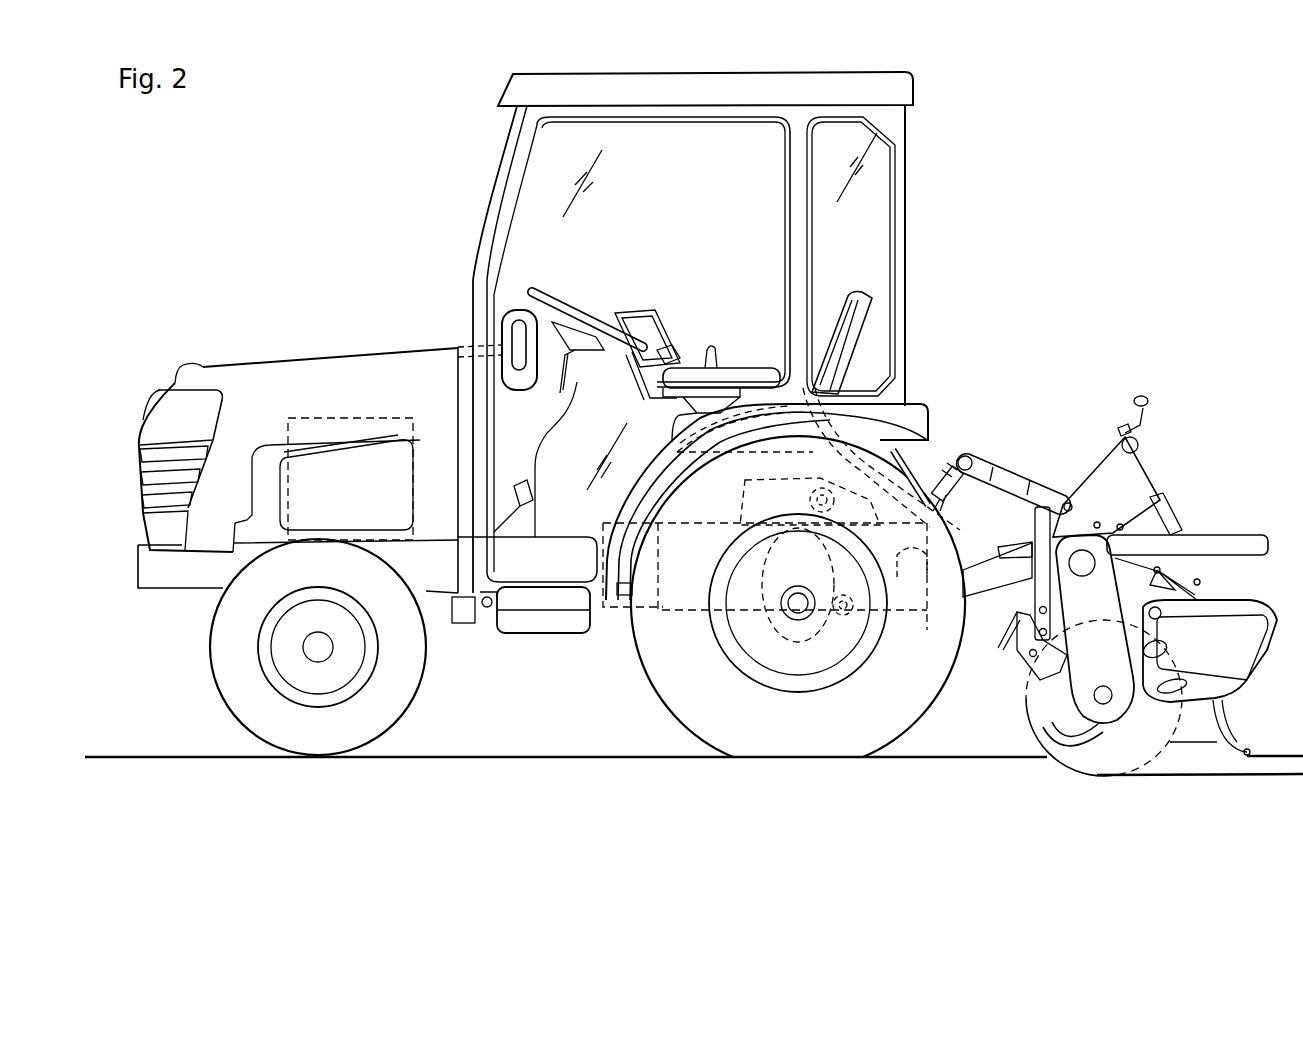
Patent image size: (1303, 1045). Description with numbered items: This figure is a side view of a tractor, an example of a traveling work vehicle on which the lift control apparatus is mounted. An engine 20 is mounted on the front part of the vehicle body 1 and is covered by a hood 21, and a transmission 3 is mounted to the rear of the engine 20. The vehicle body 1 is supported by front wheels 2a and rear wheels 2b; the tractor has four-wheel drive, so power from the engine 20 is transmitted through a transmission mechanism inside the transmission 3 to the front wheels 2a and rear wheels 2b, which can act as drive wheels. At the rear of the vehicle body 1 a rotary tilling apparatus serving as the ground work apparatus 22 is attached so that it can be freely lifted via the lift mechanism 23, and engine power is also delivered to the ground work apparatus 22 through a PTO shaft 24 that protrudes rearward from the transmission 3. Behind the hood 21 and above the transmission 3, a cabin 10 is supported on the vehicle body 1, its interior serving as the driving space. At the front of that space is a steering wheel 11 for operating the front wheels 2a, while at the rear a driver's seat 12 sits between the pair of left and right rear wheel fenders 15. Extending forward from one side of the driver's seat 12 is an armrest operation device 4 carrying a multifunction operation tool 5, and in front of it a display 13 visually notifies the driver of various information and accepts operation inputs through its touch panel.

The vehicle body 1 is at (150, 607).
The front wheels 2a is at (240, 710).
The rear wheels 2b is at (683, 715).
The transmission 3 is at (690, 575).
The armrest operation device 4 is at (752, 362).
The multifunction operation tool 5 is at (677, 353).
The cabin 10 is at (508, 157).
The steering wheel 11 is at (583, 313).
The driver's seat 12 is at (855, 290).
The display 13 is at (650, 327).
The rear wheel fenders 15 is at (920, 412).
The engine 20 is at (350, 418).
The hood 21 is at (254, 368).
The ground work apparatus 22 is at (1220, 441).
The lift mechanism 23 is at (1005, 443).
The PTO shaft 24 is at (925, 583).